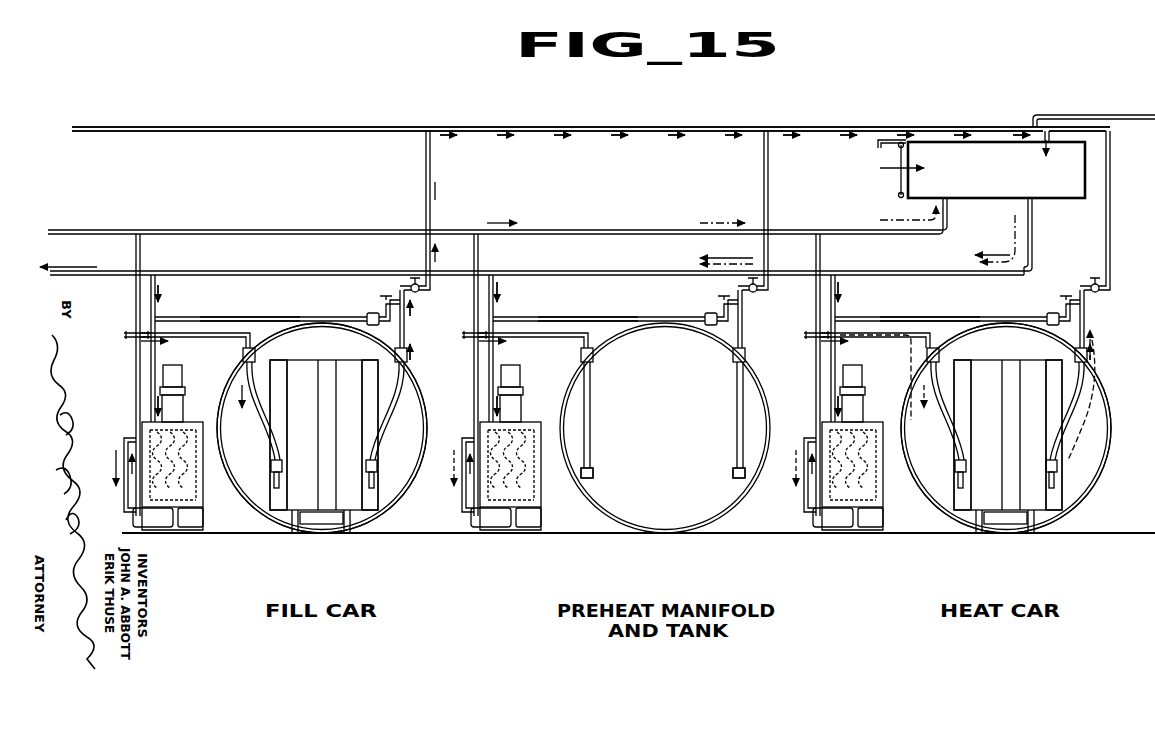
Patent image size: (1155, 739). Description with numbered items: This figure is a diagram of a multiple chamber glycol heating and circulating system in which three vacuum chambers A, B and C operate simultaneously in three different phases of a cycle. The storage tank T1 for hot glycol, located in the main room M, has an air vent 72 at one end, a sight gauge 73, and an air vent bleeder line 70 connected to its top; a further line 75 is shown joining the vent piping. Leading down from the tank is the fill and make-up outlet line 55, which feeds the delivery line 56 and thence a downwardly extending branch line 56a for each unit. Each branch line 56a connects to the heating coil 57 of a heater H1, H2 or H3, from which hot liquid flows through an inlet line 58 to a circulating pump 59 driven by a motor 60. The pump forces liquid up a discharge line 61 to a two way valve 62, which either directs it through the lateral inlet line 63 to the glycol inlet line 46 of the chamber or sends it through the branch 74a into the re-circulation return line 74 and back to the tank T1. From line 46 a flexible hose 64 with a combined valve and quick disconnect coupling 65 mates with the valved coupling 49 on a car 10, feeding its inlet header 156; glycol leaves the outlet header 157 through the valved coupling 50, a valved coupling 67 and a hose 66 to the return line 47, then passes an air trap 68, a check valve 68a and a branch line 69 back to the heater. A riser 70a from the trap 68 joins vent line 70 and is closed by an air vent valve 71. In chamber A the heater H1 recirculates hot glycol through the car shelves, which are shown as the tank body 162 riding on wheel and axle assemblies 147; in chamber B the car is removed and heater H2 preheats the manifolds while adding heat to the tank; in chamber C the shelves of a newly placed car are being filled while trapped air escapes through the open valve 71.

The main room M is at (280, 98).
The air vent bleeder line 70 is at (84, 126).
The riser 70a is at (425, 165).
The supply pipe 75 is at (1092, 115).
The storage tank T1 is at (880, 170).
The air vent 72 is at (885, 149).
The sight gauge 73 is at (897, 181).
The re-circulation return line 74 is at (80, 229).
The branch of re-circulation return line 74a is at (141, 250).
The delivery line 56 is at (104, 277).
The branch line 56a is at (152, 352).
The outlet line 55 is at (1034, 230).
The discharge line 61 is at (135, 396).
The two way valve 62 is at (134, 332).
The inlet line 63 is at (203, 334).
The branch line 69 is at (283, 320).
The glycol inlet line 46 is at (274, 318).
The check valve 68a is at (369, 314).
The air trap 68 is at (385, 302).
The air vent valve 71 is at (413, 283).
The glycol return line 47 is at (406, 331).
The heater H3 is at (190, 422).
The heater H2 is at (530, 422).
The heater H1 is at (870, 422).
The heating coil 57 is at (195, 491).
The motor 60 is at (201, 516).
The circulating pump 59 is at (152, 519).
The inlet line 58 is at (126, 446).
The vacuum chamber C is at (272, 538).
The vacuum chamber B is at (600, 524).
The vacuum chamber A is at (945, 522).
The car 10 is at (368, 500).
The tank body 162 is at (326, 361).
The inlet header 156 is at (293, 359).
The outlet header 157 is at (359, 369).
The wheel and axle assemblies 147 is at (346, 533).
The flexible hose 64 is at (260, 436).
The combined valve and quick disconnect coupling 65 is at (270, 465).
The valved coupling 49 is at (273, 481).
The hose 66 is at (393, 412).
The valved coupling 67 is at (378, 464).
The valved coupling 50 is at (376, 472).